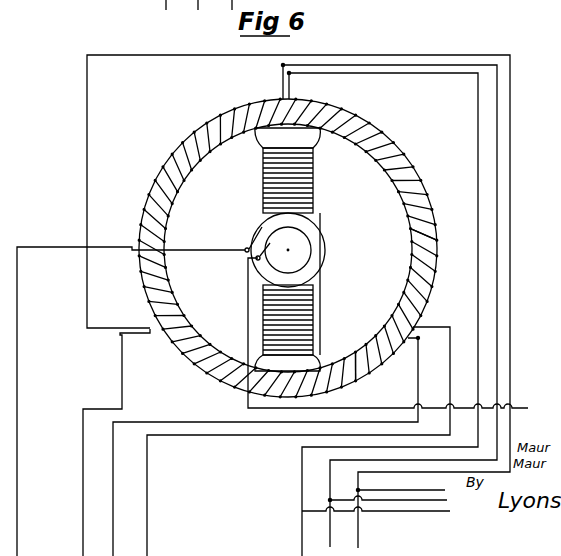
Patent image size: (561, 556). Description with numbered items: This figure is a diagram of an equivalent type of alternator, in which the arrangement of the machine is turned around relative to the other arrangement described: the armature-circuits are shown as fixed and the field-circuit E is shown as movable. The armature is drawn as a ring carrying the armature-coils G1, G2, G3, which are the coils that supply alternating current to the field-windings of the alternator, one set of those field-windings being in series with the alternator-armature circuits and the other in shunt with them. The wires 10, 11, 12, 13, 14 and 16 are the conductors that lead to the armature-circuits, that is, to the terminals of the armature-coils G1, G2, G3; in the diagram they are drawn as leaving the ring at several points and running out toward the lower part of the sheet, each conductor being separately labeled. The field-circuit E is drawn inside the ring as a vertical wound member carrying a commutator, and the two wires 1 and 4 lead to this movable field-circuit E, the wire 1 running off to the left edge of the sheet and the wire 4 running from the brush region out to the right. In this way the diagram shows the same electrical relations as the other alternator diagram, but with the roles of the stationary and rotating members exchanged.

The wire 1 is at (131, 401).
The wire 4 is at (396, 337).
The wire 10 is at (298, 441).
The wire 11 is at (116, 442).
The wire 12 is at (266, 447).
The wire 13 is at (380, 313).
The wire 14 is at (389, 305).
The conductor wire 16 is at (298, 301).
The field-circuit E is at (313, 201).
The armature-coil G1 is at (288, 248).
The armature-coil G2 is at (353, 355).
The armature-coil G3 is at (436, 244).